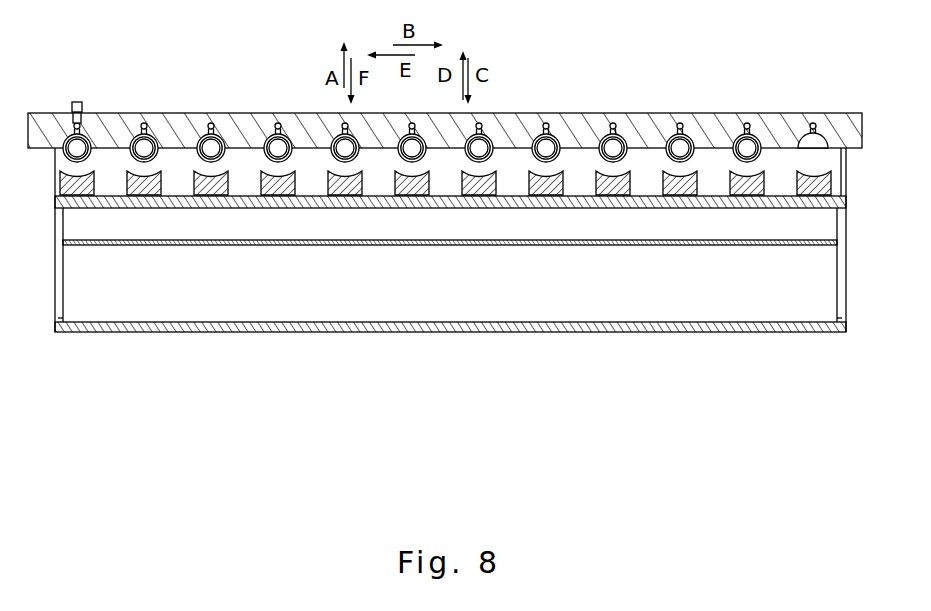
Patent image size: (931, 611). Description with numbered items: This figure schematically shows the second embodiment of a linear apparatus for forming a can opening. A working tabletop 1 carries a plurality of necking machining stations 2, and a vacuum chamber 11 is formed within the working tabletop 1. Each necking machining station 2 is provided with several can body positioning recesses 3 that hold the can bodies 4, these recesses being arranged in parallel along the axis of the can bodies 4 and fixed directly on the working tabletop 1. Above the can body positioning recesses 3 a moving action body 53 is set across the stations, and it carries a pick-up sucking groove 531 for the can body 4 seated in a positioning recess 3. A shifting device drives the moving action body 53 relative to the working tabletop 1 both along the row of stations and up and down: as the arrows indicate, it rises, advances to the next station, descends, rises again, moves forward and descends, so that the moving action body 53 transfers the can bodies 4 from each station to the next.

The working tabletop 1 is at (303, 203).
The vacuum chamber 11 is at (412, 225).
The necking machining station 2 is at (412, 102).
The can body positioning recess 3 is at (263, 175).
The can body 4 is at (547, 134).
The moving action body 53 is at (645, 127).
The pick-up sucking groove 531 is at (805, 132).